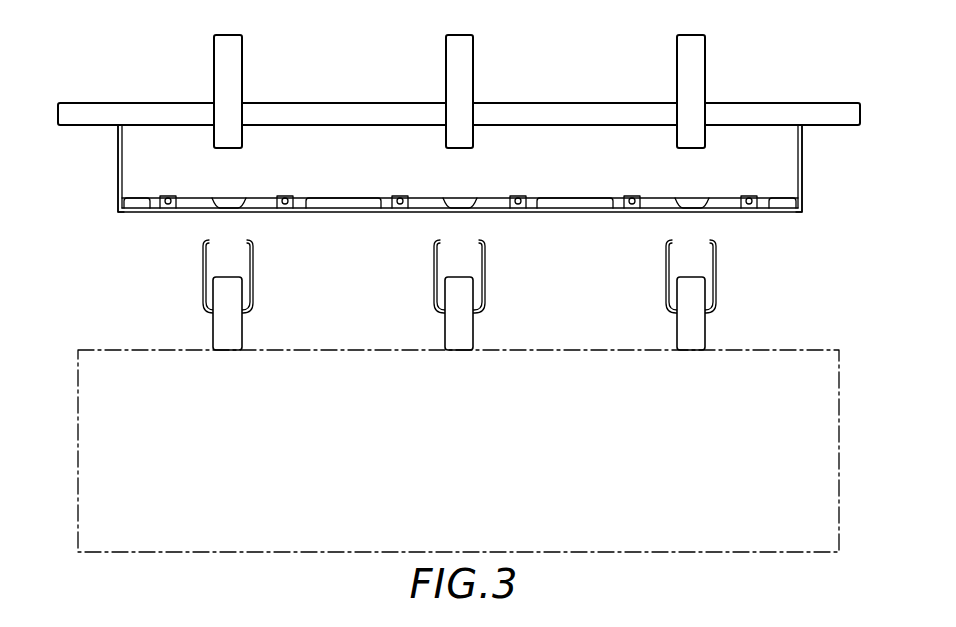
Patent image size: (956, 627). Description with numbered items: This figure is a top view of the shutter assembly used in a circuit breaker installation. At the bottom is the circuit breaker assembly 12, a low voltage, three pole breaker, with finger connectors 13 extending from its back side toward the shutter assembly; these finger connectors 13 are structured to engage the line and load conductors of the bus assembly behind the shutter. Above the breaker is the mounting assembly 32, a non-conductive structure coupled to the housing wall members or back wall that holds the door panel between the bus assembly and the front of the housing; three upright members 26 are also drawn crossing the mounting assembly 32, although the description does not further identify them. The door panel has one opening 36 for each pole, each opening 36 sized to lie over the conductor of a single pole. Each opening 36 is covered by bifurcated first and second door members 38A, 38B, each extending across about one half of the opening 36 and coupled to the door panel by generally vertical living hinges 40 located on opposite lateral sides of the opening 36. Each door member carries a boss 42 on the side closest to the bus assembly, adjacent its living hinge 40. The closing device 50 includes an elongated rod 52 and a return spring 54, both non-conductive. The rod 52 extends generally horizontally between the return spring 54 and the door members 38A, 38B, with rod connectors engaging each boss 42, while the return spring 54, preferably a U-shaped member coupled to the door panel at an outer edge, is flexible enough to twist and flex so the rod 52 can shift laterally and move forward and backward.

The circuit breaker assembly 12 is at (128, 350).
The finger connectors 13 is at (241, 333).
The support posts 26 is at (214, 62).
The mounting assembly 32 is at (740, 112).
The opening 36 is at (237, 207).
The first door member 38A is at (257, 214).
The second door member 38B is at (197, 214).
The living hinge 40 is at (152, 200).
The boss 42 is at (172, 199).
The closing device 50 is at (98, 189).
The rod 52 is at (570, 197).
The return spring 54 is at (119, 213).